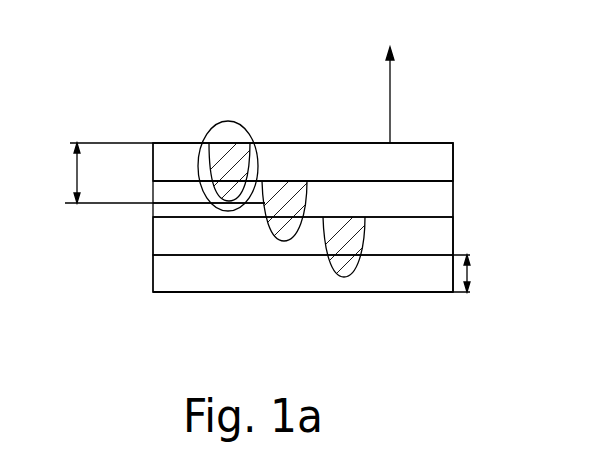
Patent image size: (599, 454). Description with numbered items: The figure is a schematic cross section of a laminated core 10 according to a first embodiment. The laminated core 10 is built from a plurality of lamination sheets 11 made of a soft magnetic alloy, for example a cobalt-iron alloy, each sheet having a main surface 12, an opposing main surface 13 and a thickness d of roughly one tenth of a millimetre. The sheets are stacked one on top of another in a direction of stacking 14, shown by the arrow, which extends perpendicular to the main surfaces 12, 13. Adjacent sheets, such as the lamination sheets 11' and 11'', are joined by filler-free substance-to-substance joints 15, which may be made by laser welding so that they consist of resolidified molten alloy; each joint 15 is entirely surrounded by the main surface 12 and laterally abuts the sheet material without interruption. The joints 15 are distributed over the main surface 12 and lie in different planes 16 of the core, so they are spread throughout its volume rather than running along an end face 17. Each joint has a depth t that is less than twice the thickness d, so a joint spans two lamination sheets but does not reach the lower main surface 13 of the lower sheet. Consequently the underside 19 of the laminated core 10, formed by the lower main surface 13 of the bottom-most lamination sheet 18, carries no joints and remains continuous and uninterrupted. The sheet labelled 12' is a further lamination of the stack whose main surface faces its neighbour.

The laminated core 10 is at (190, 93).
The lamination sheet 11'' is at (291, 117).
The lamination sheet 11' is at (273, 184).
The lamination sheet 11 is at (255, 221).
The main surface 12 is at (316, 181).
The substrate layer 12' is at (255, 247).
The opposing main surface 13 is at (348, 181).
The direction of stacking 14 is at (393, 92).
The substance-to-substance joint 15 is at (228, 150).
The plane 16 is at (316, 189).
The end face 17 is at (150, 270).
The bottom-most lamination sheet 18 is at (207, 285).
The underside 19 is at (230, 295).
The depth t is at (109, 173).
The thickness d is at (470, 273).